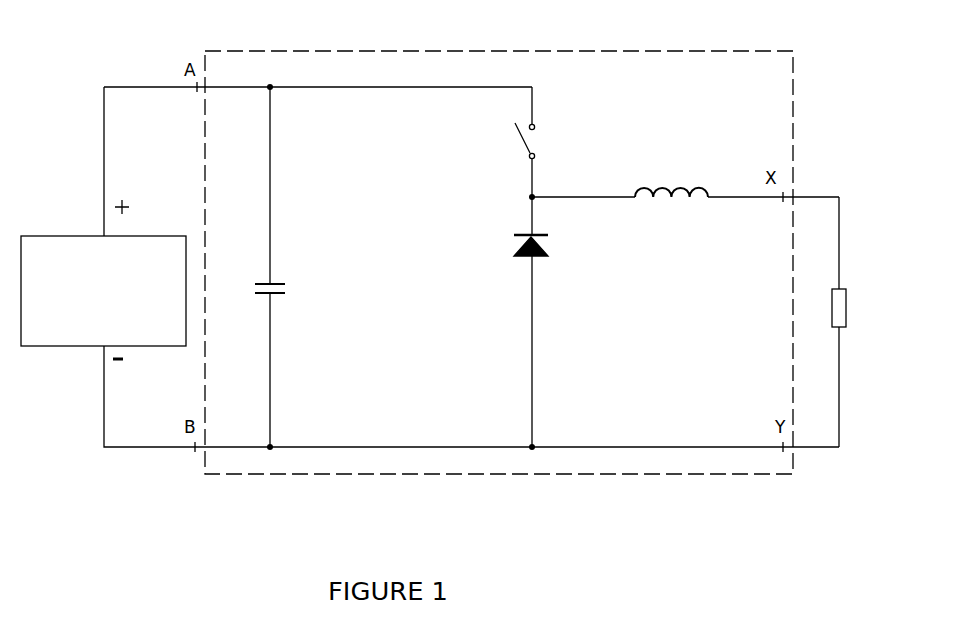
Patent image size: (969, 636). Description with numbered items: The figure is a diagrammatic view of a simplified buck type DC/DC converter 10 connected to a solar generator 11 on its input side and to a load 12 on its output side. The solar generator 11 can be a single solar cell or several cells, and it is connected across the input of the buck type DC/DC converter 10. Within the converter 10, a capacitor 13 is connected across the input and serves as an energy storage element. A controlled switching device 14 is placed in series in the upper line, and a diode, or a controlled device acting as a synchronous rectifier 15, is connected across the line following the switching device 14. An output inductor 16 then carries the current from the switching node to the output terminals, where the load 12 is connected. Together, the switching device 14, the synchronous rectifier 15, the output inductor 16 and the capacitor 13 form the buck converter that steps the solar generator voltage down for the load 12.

The buck type DC/DC converter 10 is at (499, 247).
The solar generator 11 is at (103, 291).
The load 12 is at (874, 312).
The capacitor 13 is at (283, 302).
The controlled switching device 14 is at (521, 140).
The synchronous rectifier 15 is at (528, 239).
The output inductor 16 is at (671, 202).